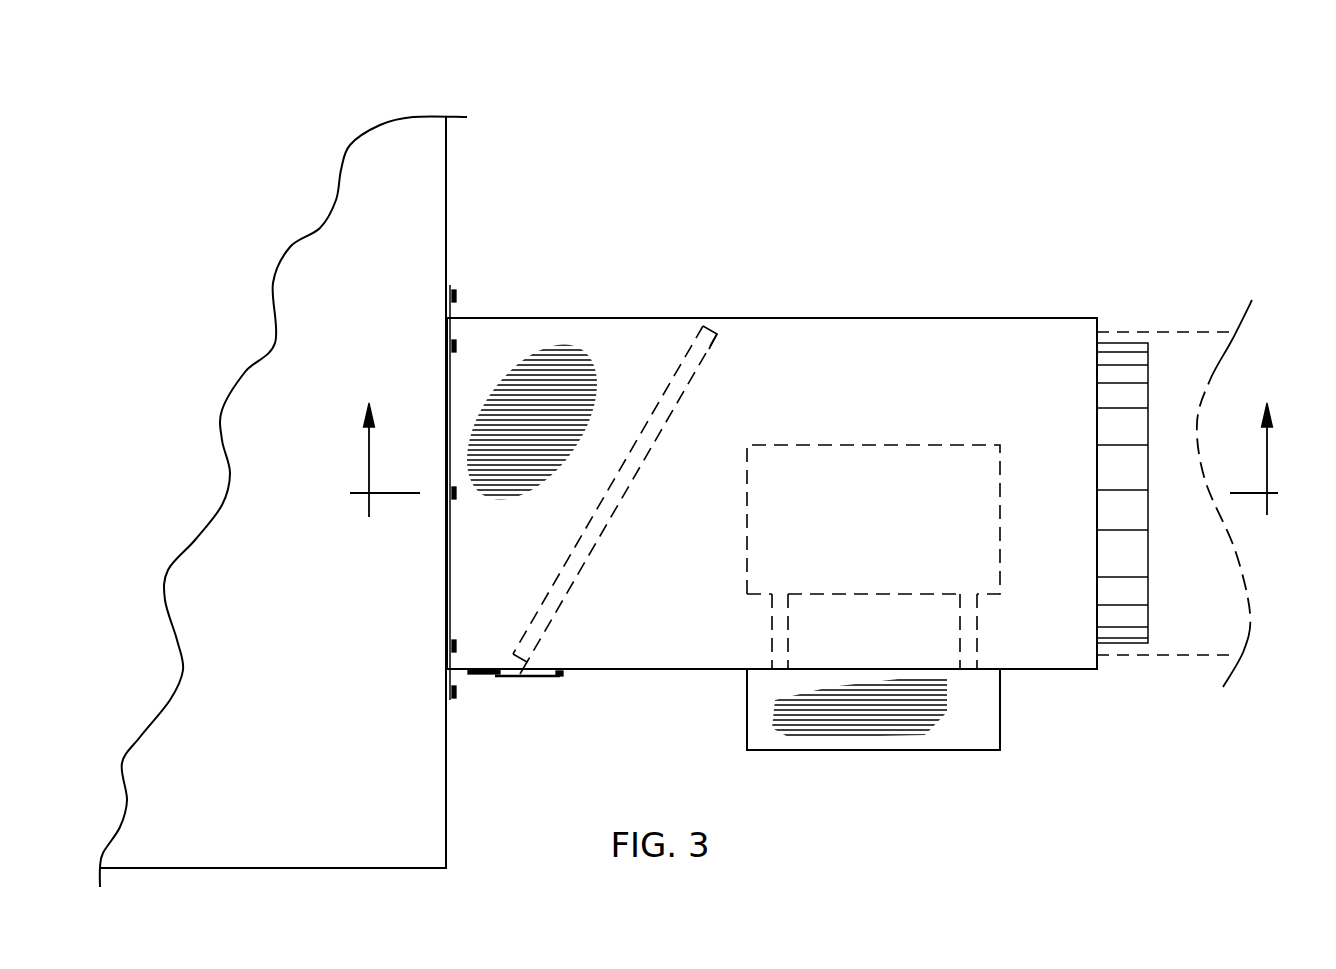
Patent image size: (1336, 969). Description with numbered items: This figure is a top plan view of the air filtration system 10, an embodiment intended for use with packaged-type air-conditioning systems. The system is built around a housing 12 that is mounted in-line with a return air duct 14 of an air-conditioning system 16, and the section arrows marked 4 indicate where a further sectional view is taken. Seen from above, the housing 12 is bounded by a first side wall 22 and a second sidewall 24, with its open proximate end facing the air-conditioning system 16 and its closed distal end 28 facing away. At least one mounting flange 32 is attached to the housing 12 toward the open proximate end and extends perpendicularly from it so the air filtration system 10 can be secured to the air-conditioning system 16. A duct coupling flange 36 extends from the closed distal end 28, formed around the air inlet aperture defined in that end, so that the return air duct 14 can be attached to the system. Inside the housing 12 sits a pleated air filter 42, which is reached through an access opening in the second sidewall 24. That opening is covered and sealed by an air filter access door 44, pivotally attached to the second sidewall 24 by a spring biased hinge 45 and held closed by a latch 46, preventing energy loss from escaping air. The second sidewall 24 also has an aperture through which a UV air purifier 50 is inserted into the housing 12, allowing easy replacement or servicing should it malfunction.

The air filtration system 10 is at (807, 230).
The housing 12 is at (1062, 676).
The return air duct 14 is at (1213, 628).
The air-conditioning system 16 is at (390, 172).
The first side wall 22 is at (573, 318).
The second sidewall 24 is at (695, 670).
The closed distal end 28 is at (1104, 320).
The mounting flange 32 is at (449, 290).
The duct coupling flange 36 is at (1118, 617).
The pleated air filter 42 is at (714, 326).
The air filter access door 44 is at (535, 677).
The spring biased hinge 45 is at (563, 672).
The latch 46 is at (485, 677).
The UV air purifier 50 is at (962, 732).
The section line 4- 4 is at (815, 460).